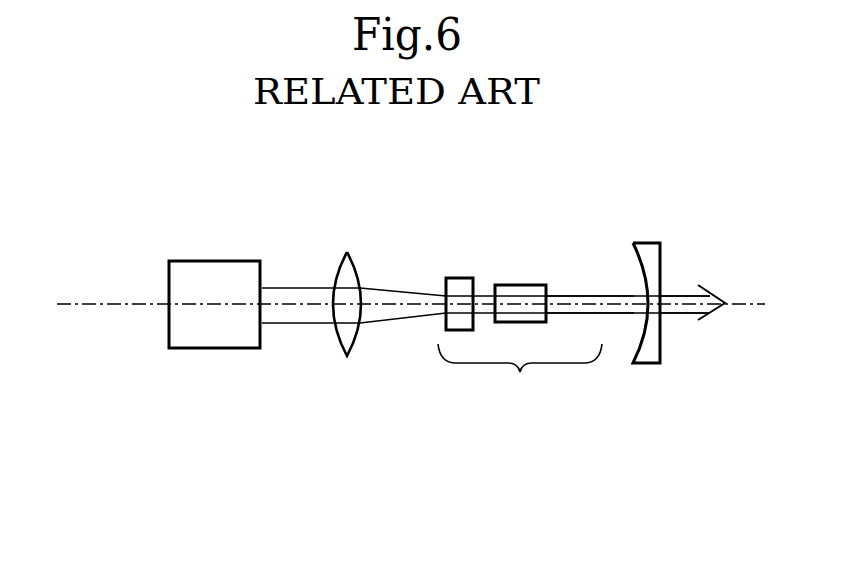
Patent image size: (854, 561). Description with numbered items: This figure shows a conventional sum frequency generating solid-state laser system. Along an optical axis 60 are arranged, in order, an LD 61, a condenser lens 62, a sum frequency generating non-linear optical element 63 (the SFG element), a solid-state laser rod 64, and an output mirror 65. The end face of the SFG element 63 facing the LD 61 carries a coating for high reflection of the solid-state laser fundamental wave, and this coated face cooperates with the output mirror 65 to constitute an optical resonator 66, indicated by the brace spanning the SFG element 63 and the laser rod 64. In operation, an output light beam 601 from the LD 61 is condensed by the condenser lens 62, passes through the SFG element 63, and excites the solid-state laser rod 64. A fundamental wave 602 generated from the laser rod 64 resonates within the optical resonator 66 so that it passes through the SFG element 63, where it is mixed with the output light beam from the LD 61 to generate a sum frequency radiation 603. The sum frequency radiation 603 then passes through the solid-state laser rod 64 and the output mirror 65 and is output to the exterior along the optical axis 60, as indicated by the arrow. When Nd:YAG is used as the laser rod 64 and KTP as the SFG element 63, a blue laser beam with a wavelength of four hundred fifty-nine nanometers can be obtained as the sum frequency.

The optical axis 60 is at (98, 306).
The LD 61 is at (218, 279).
The output light beam 601 is at (307, 312).
The condenser lens 62 is at (350, 273).
The sum frequency generating non-linear optical element 63 is at (453, 318).
The solid-state laser rod 64 is at (512, 287).
The optical resonator 66 is at (520, 374).
The fundamental wave 602 is at (610, 295).
The output mirror 65 is at (650, 352).
The sum frequency radiation 603 is at (688, 305).